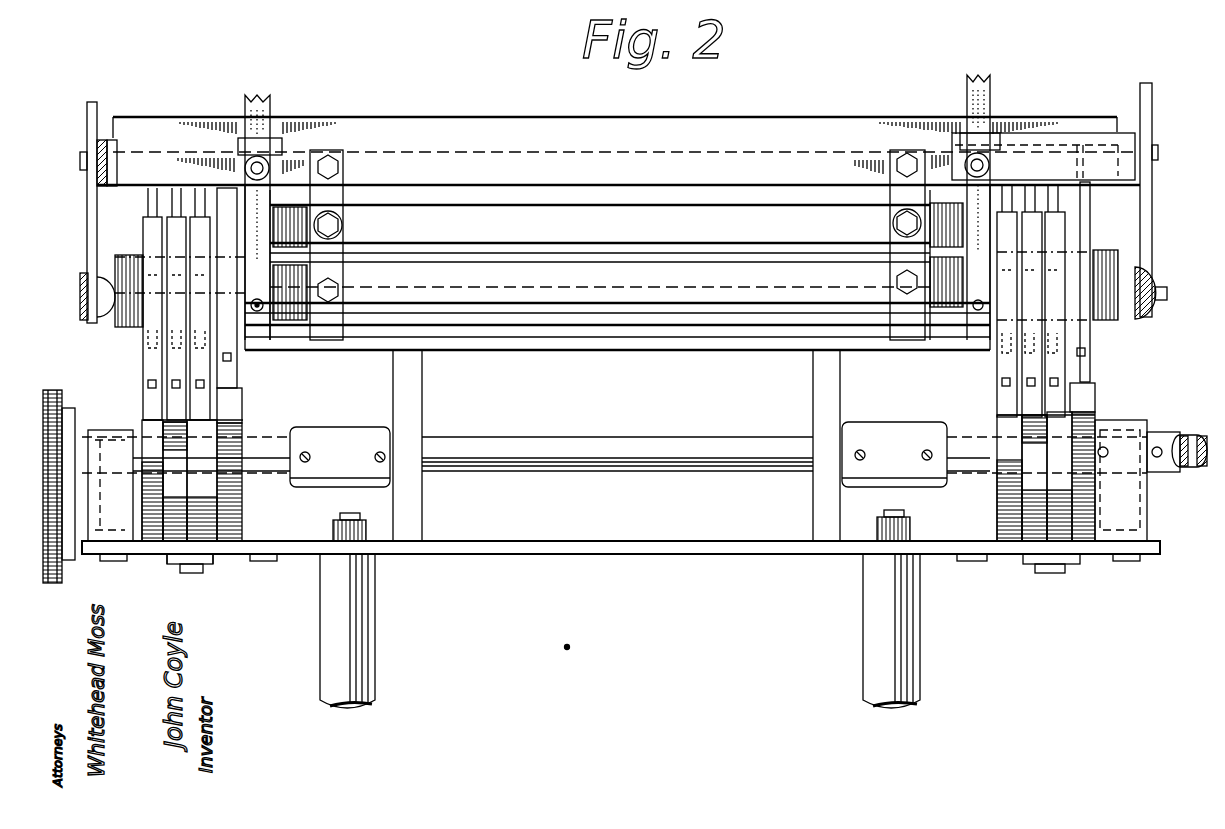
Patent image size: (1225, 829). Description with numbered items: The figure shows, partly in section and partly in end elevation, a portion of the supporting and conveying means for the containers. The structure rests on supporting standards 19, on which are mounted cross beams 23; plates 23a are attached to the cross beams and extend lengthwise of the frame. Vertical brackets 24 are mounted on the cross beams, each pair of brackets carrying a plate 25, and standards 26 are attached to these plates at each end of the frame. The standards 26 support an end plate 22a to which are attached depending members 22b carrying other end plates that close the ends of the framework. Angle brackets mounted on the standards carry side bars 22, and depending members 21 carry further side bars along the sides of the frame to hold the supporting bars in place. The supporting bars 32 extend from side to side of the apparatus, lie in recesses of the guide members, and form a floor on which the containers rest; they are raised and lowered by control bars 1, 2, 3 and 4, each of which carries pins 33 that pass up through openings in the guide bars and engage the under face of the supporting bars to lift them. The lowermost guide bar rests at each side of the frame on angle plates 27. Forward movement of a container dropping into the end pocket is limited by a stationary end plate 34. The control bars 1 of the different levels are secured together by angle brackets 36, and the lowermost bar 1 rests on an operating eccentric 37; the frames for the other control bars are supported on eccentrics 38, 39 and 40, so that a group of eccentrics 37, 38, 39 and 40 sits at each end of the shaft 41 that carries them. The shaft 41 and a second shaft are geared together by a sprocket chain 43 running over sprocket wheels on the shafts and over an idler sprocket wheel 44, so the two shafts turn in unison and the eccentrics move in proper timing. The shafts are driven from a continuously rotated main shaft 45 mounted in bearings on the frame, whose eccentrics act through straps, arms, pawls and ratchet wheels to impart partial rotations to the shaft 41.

The control bar 1 is at (1106, 215).
The control bar 2 is at (1106, 240).
The control bar 3 is at (1168, 232).
The control bar 4 is at (150, 238).
The supporting standard 19 is at (363, 628).
The depending member 21 is at (87, 220).
The side bar 22 is at (110, 143).
The end plate 22a is at (601, 144).
The depending member 22b is at (383, 184).
The cross beam 23 is at (193, 542).
The plate 23a is at (173, 565).
The vertical bracket 24 is at (425, 400).
The plate 25 is at (647, 342).
The standard 26 is at (263, 100).
The angle plate 27 is at (223, 527).
The supporting bar 32 is at (337, 198).
The pin 33 is at (197, 195).
The stationary end plate 34 is at (616, 265).
The angle bracket 36 is at (205, 352).
The operating eccentric 37 is at (233, 392).
The eccentric 38 is at (203, 430).
The eccentric 39 is at (177, 512).
The eccentric 40 is at (152, 428).
The shaft 41 is at (60, 380).
The sprocket chain 43 is at (53, 583).
The idler sprocket wheel 44 is at (50, 587).
The main shaft 45 is at (1203, 470).